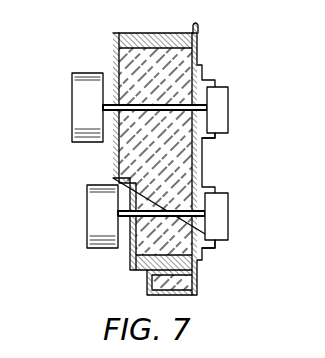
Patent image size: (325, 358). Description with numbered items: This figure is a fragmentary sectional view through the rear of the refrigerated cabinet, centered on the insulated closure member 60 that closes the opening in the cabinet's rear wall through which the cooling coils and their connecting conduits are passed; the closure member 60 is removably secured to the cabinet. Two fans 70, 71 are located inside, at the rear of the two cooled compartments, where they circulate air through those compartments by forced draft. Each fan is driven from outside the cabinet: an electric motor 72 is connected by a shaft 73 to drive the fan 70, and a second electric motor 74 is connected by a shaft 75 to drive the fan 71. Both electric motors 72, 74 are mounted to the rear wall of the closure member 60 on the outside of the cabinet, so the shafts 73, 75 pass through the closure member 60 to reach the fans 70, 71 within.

The insulated closure member 60 is at (175, 62).
The fan 70 is at (76, 100).
The fan 71 is at (92, 212).
The electric motor 72 is at (231, 108).
The shaft 73 is at (212, 120).
The electric motor 74 is at (226, 207).
The shaft 75 is at (210, 226).